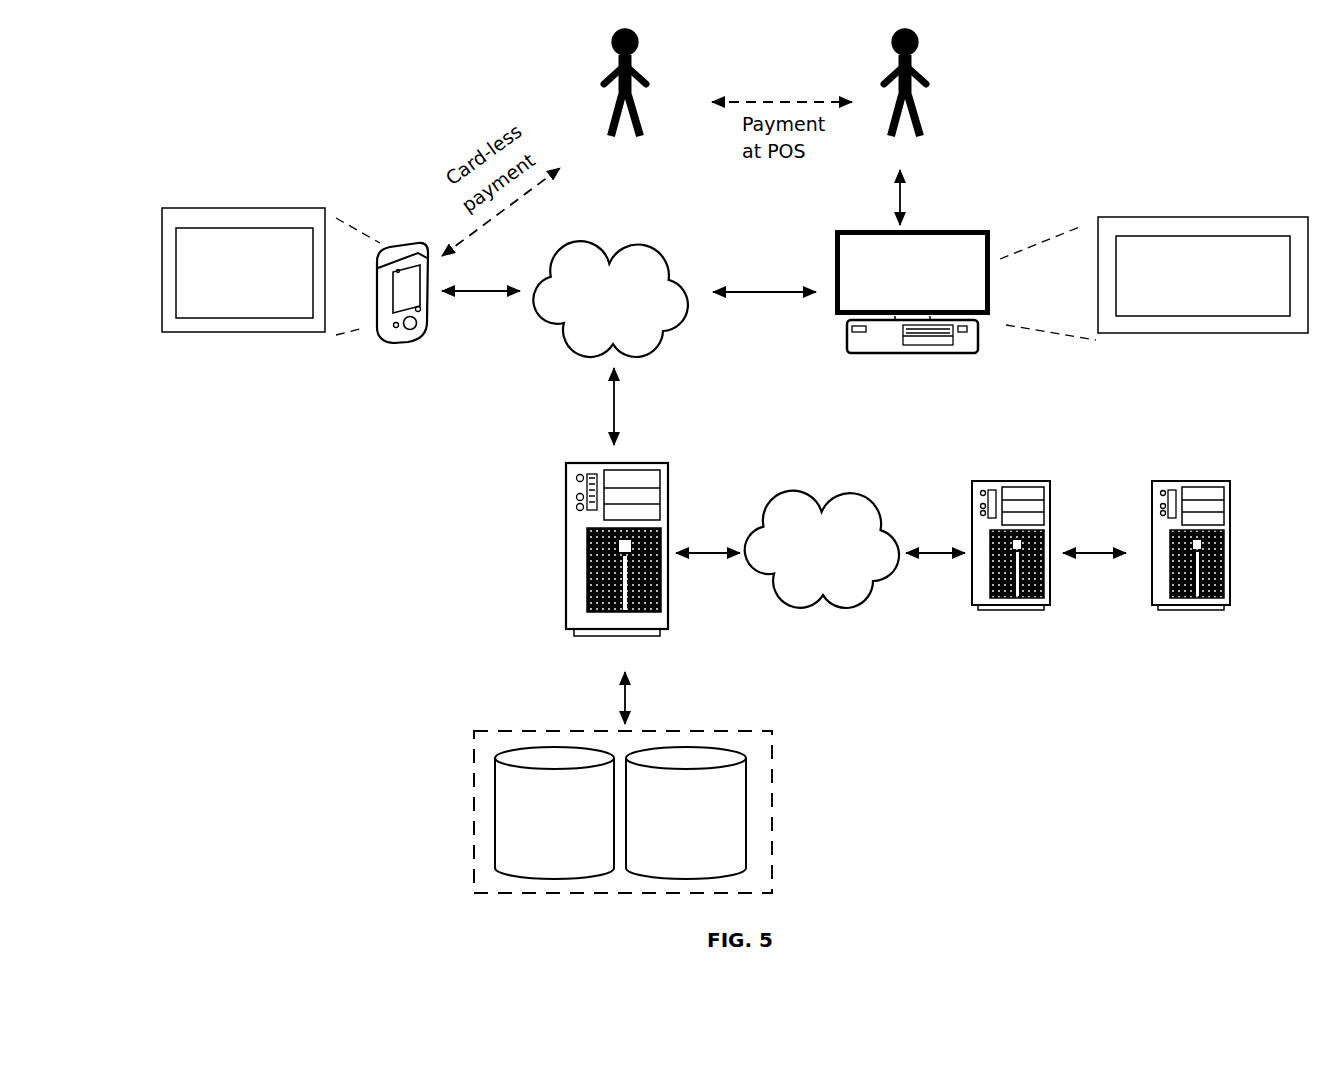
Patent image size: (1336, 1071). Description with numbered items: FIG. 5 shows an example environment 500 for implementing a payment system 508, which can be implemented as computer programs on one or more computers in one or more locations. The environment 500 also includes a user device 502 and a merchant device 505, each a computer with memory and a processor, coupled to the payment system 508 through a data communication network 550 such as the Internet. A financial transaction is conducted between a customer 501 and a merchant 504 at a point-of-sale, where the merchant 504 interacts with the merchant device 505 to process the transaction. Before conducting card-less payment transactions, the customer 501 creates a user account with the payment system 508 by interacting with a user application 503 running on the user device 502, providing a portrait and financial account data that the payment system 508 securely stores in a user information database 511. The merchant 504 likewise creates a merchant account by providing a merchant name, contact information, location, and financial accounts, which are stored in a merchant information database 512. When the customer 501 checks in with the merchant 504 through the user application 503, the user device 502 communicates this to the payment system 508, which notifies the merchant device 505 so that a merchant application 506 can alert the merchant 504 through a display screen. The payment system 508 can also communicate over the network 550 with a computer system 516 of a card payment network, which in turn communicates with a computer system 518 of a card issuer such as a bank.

The environment 500 is at (1240, 95).
The customer 501 is at (660, 78).
The user device 502 is at (385, 242).
The user application 503 is at (271, 271).
The merchant 504 is at (940, 78).
The merchant device 505 is at (972, 222).
The merchant application 506 is at (1154, 278).
The payment system 508 is at (562, 490).
The user information database 511 is at (554, 813).
The merchant information database 512 is at (686, 813).
The computer system of a card payment network 516 is at (1060, 496).
The computer system of a card issuer 518 is at (1240, 496).
The network 550 is at (660, 336).